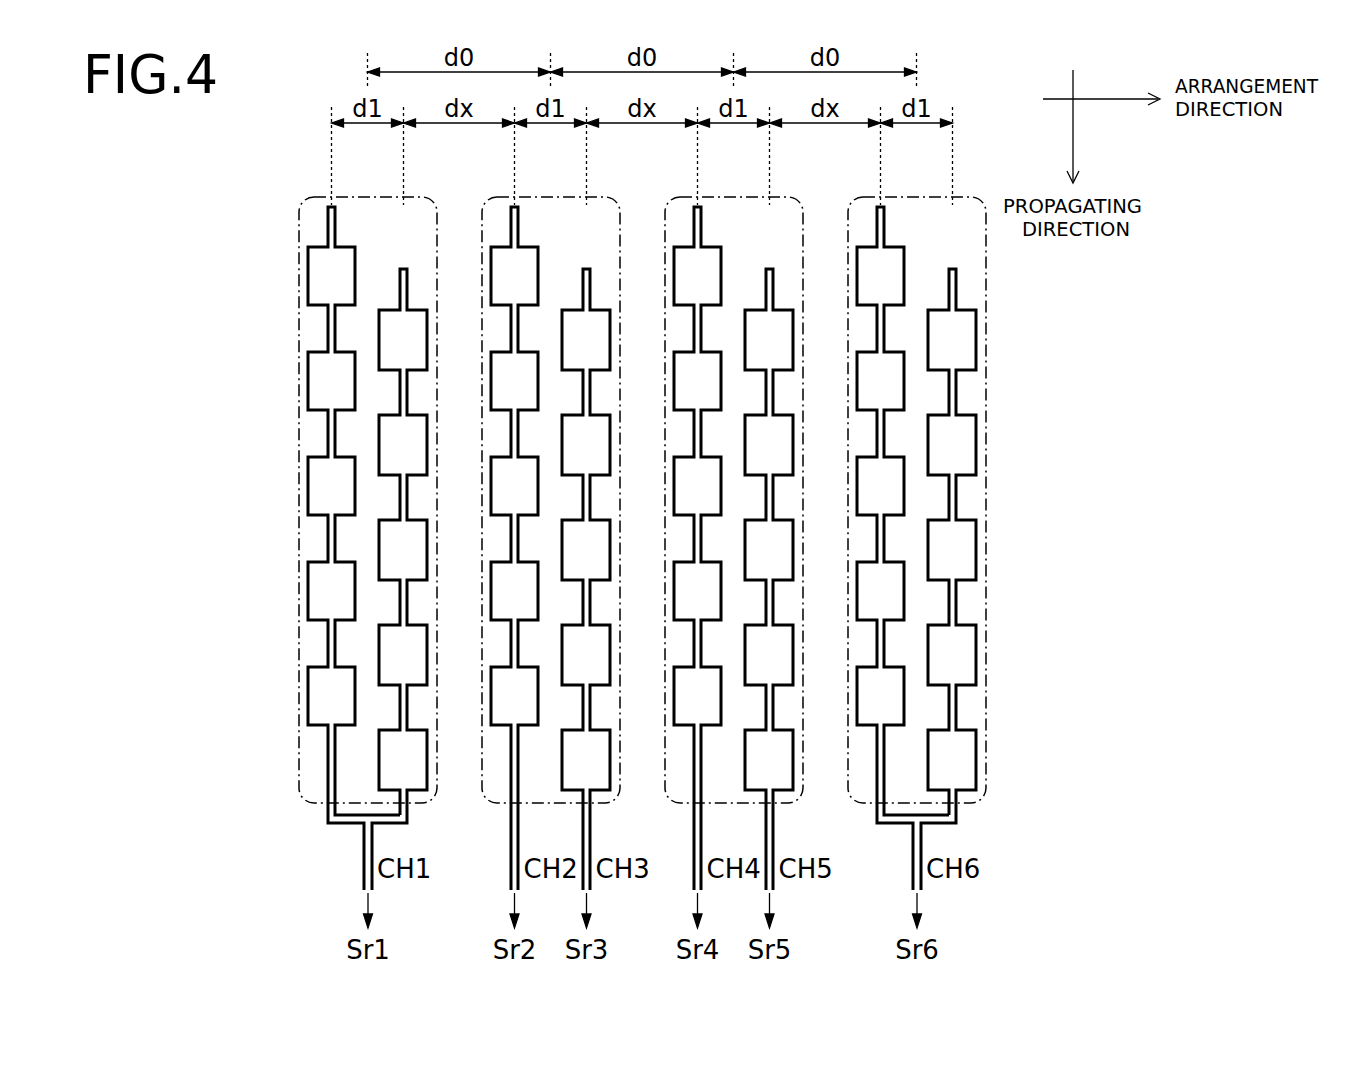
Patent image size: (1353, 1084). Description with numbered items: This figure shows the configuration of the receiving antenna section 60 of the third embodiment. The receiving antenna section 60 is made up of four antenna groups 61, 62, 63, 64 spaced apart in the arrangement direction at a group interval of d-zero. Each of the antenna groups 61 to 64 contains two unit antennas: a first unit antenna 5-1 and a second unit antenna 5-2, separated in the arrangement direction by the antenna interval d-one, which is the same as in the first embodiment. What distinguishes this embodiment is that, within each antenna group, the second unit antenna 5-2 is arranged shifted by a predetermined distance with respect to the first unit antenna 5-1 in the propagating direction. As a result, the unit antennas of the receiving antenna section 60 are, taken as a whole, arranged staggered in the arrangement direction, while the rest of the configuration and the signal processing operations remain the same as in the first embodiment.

The receiving antenna section 60 is at (273, 157).
The antenna group 61 is at (297, 800).
The antenna group 62 is at (485, 810).
The antenna group 63 is at (669, 812).
The antenna group 64 is at (987, 806).
The first unit antenna 5-1 is at (348, 227).
The second unit antenna 5-2 is at (421, 273).